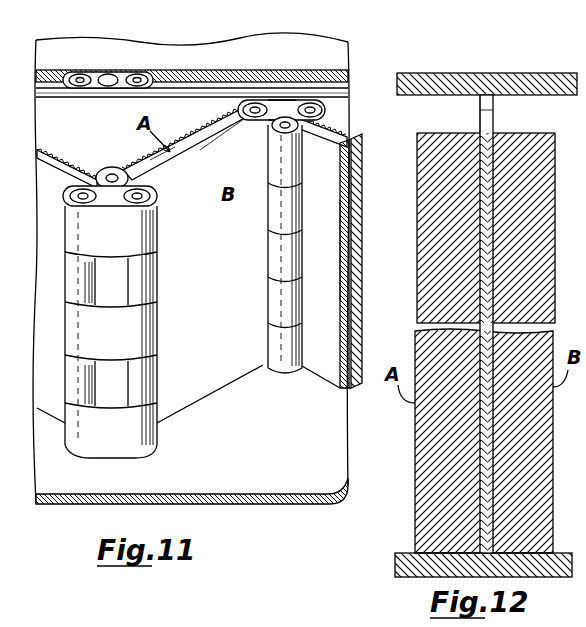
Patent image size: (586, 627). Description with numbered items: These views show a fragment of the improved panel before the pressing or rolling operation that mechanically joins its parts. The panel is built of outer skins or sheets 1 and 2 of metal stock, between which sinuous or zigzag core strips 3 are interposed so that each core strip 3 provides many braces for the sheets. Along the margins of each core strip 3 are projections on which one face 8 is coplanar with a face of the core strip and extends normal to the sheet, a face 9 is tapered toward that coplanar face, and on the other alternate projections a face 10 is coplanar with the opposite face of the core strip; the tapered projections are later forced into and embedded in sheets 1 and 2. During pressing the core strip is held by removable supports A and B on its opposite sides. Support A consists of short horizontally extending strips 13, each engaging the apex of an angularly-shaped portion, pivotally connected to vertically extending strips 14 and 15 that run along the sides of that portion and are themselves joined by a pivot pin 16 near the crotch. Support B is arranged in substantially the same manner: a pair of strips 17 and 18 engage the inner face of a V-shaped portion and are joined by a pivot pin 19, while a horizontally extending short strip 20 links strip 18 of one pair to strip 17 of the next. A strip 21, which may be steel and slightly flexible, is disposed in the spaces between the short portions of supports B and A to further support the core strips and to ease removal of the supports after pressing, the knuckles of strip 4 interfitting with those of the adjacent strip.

In FIG. 11, the outer sheet 1 is at (340, 53).
In FIG. 12, the outer sheet 1 is at (555, 72).
In FIG. 11, the outer sheet 2 is at (244, 452).
In FIG. 12, the outer sheet 2 is at (403, 553).
In FIG. 11, the core strip 3 is at (358, 284).
In FIG. 12, the core strip 3 is at (492, 287).
In FIG. 11, the brace strip 4 is at (160, 162).
In FIG. 12, the coplanar face of projection 8 is at (495, 112).
In FIG. 12, the tapered face of projection 9 is at (478, 110).
In FIG. 12, the coplanar face of projection 10 is at (478, 113).
In FIG. 11, the short horizontally extending strip 13 is at (270, 100).
In FIG. 11, the vertically extending strip 14 is at (209, 140).
In FIG. 11, the vertically extending strip 15 is at (45, 150).
In FIG. 11, the pivot pin 16 is at (110, 175).
In FIG. 11, the strip 17 is at (250, 132).
In FIG. 11, the strip 18 is at (328, 233).
In FIG. 11, the pivot pin 19 is at (290, 132).
In FIG. 11, the horizontally extending short strip 20 is at (118, 90).
In FIG. 11, the strip 21 is at (172, 93).